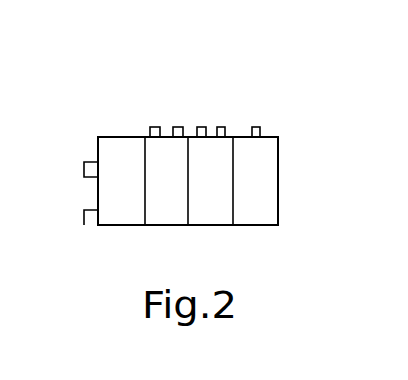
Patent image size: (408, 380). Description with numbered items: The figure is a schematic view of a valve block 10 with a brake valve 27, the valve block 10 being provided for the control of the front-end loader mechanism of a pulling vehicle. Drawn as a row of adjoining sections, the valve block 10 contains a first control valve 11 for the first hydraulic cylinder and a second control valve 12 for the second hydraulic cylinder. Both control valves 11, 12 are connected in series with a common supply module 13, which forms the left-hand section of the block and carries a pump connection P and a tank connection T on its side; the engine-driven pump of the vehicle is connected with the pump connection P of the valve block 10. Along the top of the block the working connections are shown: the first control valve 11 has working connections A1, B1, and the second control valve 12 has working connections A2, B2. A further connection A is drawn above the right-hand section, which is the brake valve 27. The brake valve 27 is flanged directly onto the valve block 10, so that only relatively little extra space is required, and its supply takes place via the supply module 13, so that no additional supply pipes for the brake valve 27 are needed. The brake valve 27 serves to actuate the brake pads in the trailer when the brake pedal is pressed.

The valve block 10 is at (142, 99).
The supply module 13 is at (109, 145).
The first control valve 11 is at (160, 210).
The second control valve 12 is at (206, 210).
The brake valve 27 is at (267, 183).
The working connection A1 is at (152, 128).
The working connection B1 is at (176, 126).
The working connection A2 is at (200, 126).
The working connection B2 is at (223, 127).
The port A is at (258, 126).
The pump connection P is at (84, 167).
The tank connection T is at (86, 212).